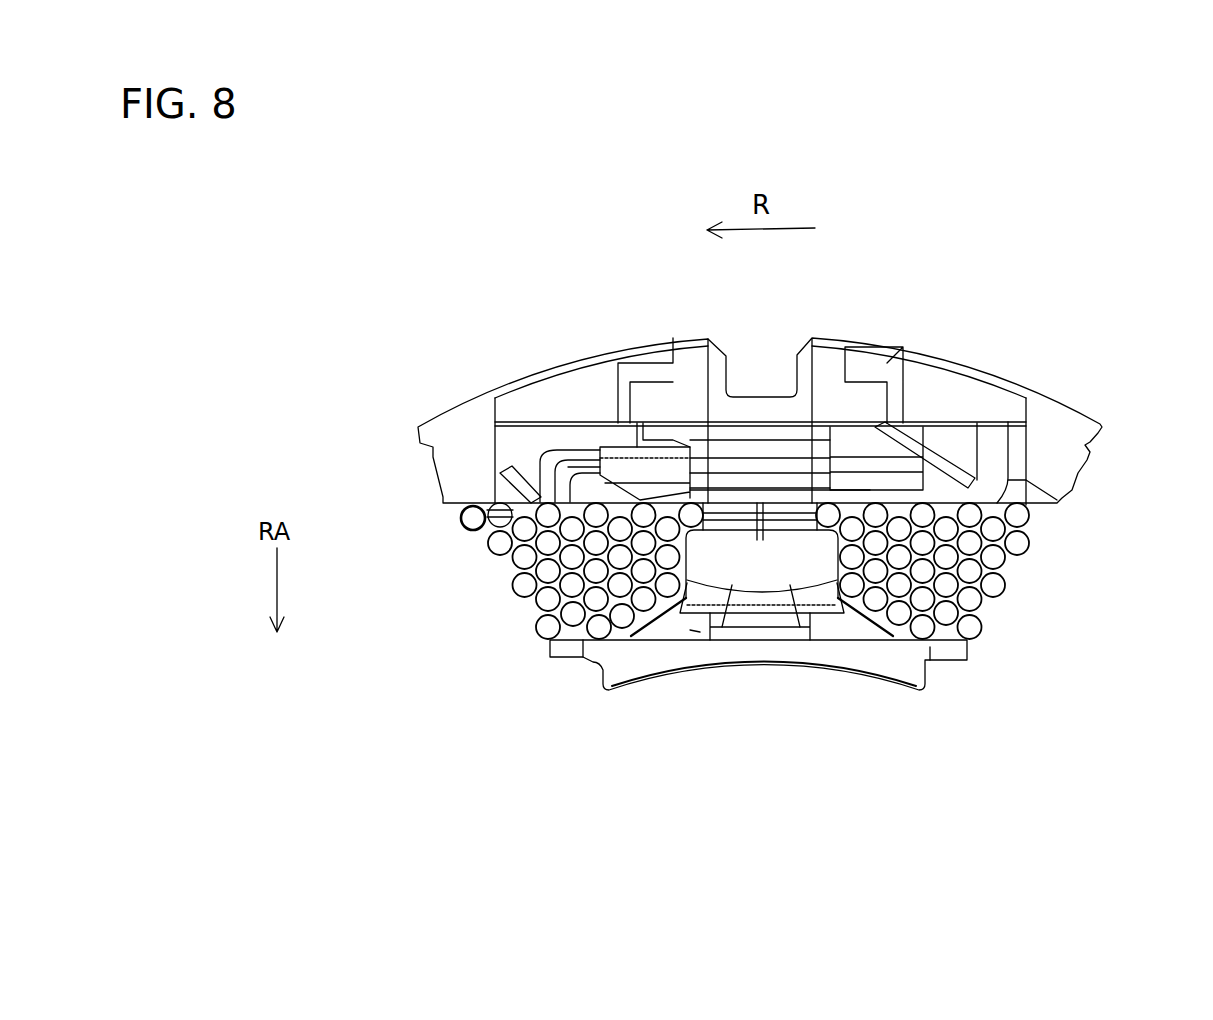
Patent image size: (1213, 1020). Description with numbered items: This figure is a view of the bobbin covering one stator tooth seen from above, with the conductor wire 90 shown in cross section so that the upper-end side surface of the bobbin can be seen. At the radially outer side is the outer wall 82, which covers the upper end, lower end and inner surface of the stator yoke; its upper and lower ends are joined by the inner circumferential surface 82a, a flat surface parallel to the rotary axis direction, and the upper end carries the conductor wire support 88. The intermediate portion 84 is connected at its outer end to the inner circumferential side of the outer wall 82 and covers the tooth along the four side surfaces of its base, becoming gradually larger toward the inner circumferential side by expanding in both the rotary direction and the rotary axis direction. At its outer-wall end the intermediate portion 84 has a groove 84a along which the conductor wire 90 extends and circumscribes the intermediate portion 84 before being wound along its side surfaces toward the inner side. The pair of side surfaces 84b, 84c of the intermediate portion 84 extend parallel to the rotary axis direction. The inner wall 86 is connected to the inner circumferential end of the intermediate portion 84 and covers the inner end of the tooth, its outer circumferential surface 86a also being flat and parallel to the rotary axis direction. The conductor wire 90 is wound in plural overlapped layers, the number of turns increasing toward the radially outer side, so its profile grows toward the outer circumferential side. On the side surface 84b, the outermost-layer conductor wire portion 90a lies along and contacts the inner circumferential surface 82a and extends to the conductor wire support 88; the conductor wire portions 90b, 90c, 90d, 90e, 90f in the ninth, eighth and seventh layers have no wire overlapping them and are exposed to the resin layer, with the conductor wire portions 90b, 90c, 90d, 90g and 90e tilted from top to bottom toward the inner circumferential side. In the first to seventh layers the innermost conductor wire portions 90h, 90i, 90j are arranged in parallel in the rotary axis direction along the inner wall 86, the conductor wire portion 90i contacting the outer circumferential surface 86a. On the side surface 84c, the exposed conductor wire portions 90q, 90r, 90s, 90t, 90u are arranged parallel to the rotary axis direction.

The outer wall 82 is at (1003, 400).
The inner circumferential surface 82a is at (463, 505).
The intermediate portion 84 is at (728, 550).
The groove 84a is at (837, 523).
The side surface 84b is at (657, 523).
The side surface 84c is at (863, 542).
The inner wall 86 is at (862, 657).
The outer circumferential surface 86a is at (693, 632).
The conductor wire support 88 is at (663, 472).
The conductor wire 90 is at (1056, 529).
The conductor wire portion 90a is at (476, 520).
The conductor wire portion 90b is at (518, 554).
The conductor wire portion 90c is at (548, 600).
The conductor wire portion 90d is at (522, 587).
The conductor wire portion 90e is at (548, 629).
The conductor wire portion 90f is at (546, 630).
The conductor wire portion 90g is at (497, 543).
The conductor wire portion 90h is at (575, 616).
The conductor wire portion 90i is at (599, 628).
The conductor wire portion 90j is at (625, 619).
The conductor wire portion 90q is at (1025, 543).
The conductor wire portion 90r is at (1005, 588).
The conductor wire portion 90s is at (1005, 560).
The conductor wire portion 90t is at (973, 632).
The conductor wire portion 90u is at (975, 604).